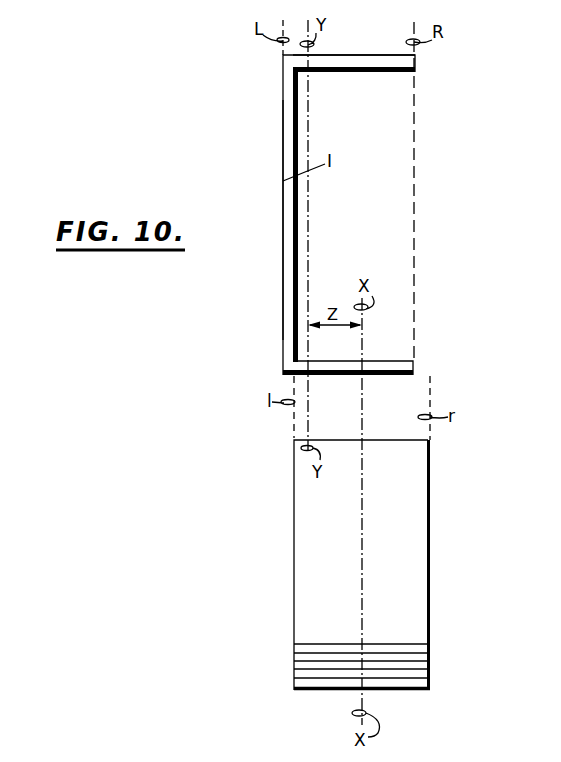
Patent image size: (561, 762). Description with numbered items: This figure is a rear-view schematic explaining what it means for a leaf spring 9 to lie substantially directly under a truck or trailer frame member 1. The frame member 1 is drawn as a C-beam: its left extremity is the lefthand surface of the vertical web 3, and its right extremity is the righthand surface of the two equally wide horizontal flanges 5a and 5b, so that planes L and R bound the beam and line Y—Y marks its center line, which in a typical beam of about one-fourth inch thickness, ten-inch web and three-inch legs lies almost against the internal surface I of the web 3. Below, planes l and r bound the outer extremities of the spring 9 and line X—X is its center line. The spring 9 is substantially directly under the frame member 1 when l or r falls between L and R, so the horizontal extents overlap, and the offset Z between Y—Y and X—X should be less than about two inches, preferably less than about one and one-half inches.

The frame member 1 is at (273, 158).
The vertical member (web) 3 is at (283, 248).
The horizontal flange 5a is at (378, 63).
The horizontal flange 5b is at (383, 367).
The leaf spring 9 is at (437, 517).